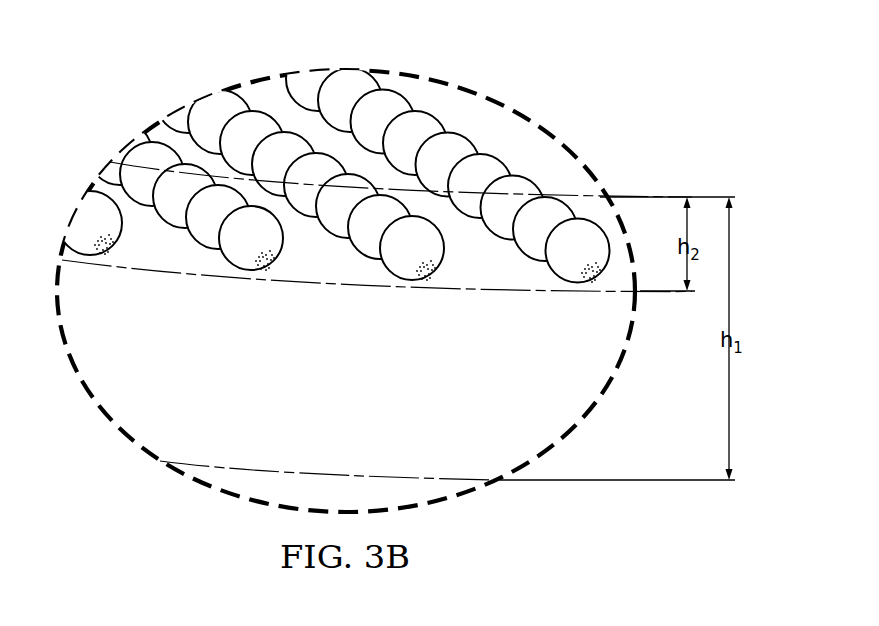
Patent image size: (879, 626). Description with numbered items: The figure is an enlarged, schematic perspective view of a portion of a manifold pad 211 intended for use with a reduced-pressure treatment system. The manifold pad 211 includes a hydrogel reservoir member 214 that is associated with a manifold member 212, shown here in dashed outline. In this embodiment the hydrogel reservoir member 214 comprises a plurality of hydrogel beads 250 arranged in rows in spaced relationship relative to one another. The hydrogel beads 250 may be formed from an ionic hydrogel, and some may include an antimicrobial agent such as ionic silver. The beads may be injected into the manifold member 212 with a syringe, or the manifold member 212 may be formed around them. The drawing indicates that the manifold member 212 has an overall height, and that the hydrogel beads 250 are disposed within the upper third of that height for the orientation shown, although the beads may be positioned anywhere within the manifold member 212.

The manifold pad 211 is at (111, 378).
The manifold member 212 is at (147, 427).
The hydrogel reservoir member 214 is at (120, 144).
The hydrogel beads 250 is at (390, 103).